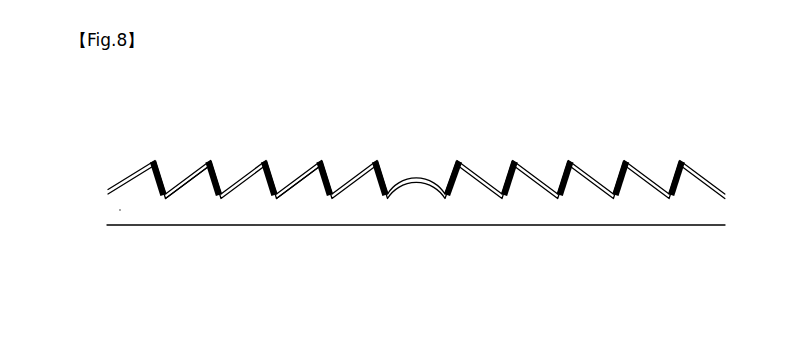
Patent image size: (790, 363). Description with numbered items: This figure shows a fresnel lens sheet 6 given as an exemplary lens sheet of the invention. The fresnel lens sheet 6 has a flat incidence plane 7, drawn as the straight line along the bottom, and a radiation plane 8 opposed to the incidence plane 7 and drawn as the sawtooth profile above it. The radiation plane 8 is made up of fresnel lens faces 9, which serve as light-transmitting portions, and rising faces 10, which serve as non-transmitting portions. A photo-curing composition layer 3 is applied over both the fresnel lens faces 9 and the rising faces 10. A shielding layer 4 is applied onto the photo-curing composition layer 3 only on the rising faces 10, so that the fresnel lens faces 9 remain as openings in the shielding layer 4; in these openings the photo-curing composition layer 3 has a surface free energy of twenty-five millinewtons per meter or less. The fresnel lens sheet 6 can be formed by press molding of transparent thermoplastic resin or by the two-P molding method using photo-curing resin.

The photo-curing composition layer 3 is at (590, 170).
The shielding layer 4 is at (552, 166).
The fresnel lens sheet 6 is at (112, 206).
The incidence plane 7 is at (125, 240).
The radiation plane 8 is at (374, 216).
The fresnel lens faces 9 is at (189, 191).
The rising faces 10 is at (320, 192).